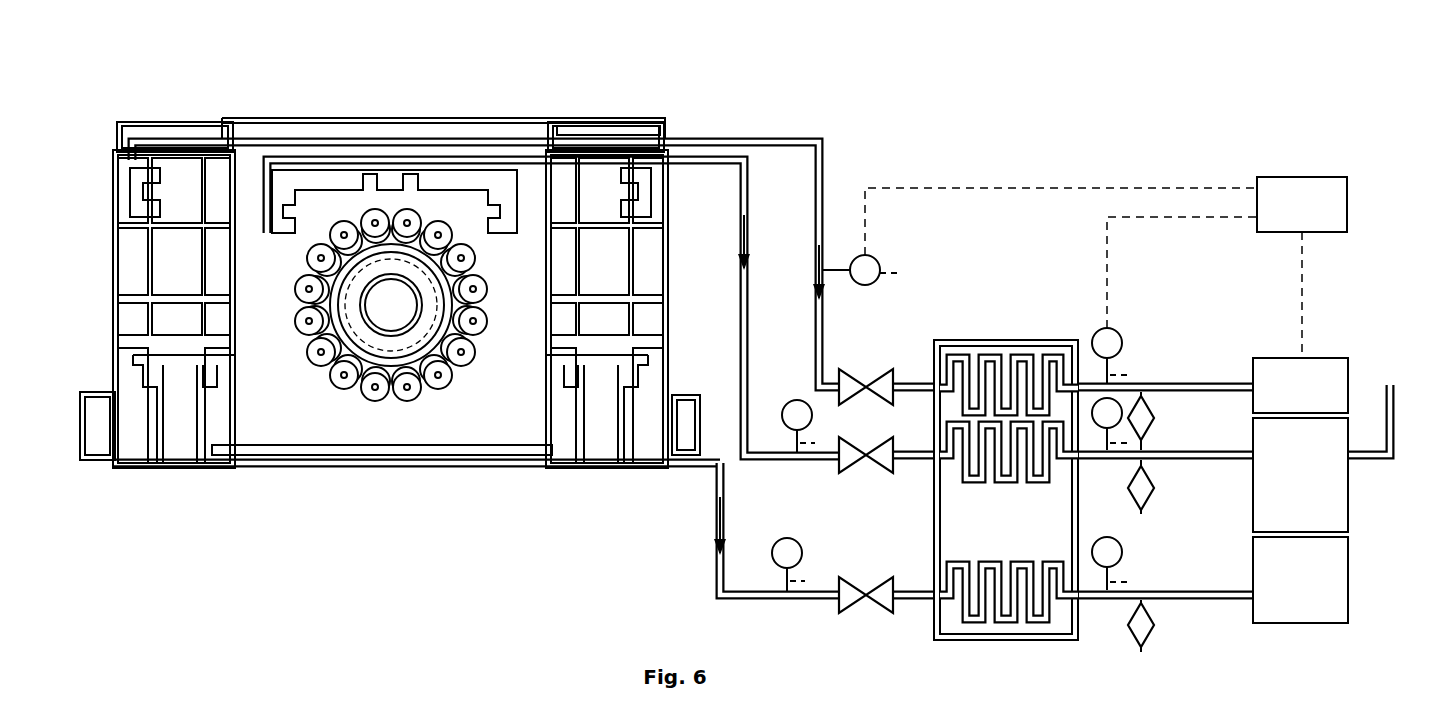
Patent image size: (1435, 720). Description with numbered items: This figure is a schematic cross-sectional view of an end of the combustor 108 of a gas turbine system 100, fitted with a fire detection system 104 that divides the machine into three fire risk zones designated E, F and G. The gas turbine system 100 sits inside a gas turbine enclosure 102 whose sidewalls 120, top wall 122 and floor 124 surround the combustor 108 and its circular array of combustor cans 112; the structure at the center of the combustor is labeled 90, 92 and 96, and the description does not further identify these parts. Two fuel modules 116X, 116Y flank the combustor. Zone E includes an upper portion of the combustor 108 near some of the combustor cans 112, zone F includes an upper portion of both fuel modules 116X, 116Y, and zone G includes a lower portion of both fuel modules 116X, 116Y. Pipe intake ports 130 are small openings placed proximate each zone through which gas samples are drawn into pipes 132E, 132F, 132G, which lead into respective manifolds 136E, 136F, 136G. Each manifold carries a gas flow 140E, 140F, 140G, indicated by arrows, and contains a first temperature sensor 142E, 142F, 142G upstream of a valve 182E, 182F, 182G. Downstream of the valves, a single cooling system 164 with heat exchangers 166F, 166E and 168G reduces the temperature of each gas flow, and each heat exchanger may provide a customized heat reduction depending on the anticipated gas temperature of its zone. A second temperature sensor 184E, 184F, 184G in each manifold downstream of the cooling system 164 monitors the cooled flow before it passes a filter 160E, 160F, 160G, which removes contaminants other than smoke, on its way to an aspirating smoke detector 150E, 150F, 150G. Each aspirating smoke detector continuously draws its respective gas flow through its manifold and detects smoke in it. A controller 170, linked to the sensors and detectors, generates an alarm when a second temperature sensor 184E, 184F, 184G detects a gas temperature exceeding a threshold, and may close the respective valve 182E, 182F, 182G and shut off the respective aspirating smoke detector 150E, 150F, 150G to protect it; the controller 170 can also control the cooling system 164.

The rotor 90 is at (433, 383).
The shaft 92 is at (448, 343).
The bearing 96 is at (391, 305).
The gas turbine system 100 is at (401, 365).
The gas turbine enclosure 102 is at (390, 308).
The fire detection system 104 is at (925, 163).
The combustor 108 is at (360, 402).
The combustor cans 112 is at (478, 322).
The fuel module 116X is at (642, 440).
The fuel module 116Y is at (133, 455).
The sidewalls 120 is at (263, 128).
The top wall 122 is at (433, 118).
The floor 124 is at (470, 467).
The pipe intake port 130 is at (135, 206).
The pipe 132E is at (508, 180).
The pipe 132F is at (502, 150).
The pipe 132G is at (420, 456).
The manifold 136E is at (748, 178).
The manifold 136F is at (706, 137).
The manifold 136G is at (728, 478).
The gas flow 140E is at (740, 250).
The gas flow 140F is at (823, 280).
The gas flow 140G is at (716, 530).
The first temperature sensor 142E is at (786, 407).
The first temperature sensor 142F is at (878, 262).
The first temperature sensor 142G is at (797, 546).
The aspirating smoke detector 150E is at (1330, 486).
The aspirating smoke detector 150F is at (1340, 378).
The aspirating smoke detector 150G is at (1330, 596).
The filter 160E is at (1150, 492).
The filter 160F is at (1148, 424).
The filter 160G is at (1150, 630).
The cooling system 164 is at (1006, 478).
The heat exchanger 166E is at (1003, 486).
The heat exchanger 166F is at (1020, 355).
The heat exchanger 168G is at (1005, 628).
The controller 170 is at (1106, 267).
The valve 182E is at (848, 470).
The valve 182F is at (866, 369).
The valve 182G is at (870, 614).
The second temperature sensor 184E is at (1117, 403).
The second temperature sensor 184F is at (1118, 333).
The second temperature sensor 184G is at (1120, 543).